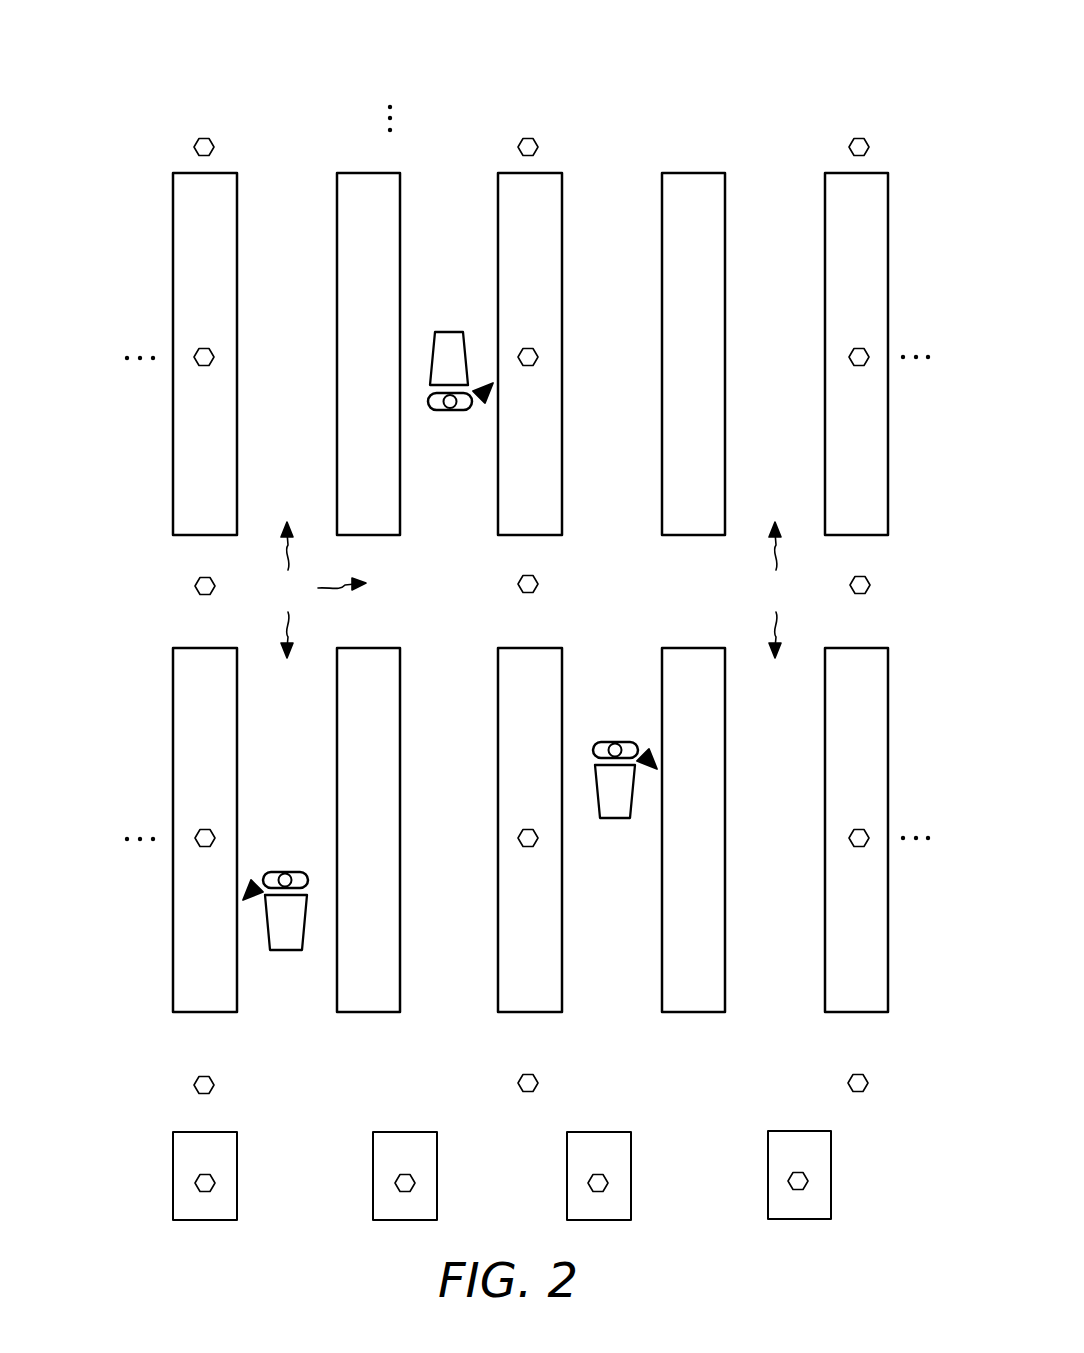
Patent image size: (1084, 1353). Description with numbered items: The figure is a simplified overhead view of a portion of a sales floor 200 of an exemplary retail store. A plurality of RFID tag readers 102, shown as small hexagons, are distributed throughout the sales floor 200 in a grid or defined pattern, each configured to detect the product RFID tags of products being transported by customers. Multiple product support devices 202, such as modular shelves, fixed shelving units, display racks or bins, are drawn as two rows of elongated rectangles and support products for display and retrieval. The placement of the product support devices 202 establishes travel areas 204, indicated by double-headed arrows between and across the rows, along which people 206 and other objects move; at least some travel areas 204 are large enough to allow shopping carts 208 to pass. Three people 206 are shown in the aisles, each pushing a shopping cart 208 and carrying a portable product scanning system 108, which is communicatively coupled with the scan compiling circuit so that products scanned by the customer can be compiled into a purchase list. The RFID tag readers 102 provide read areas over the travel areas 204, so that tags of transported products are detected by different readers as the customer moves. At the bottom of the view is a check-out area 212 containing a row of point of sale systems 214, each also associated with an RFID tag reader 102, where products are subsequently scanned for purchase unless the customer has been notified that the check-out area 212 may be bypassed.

The sales floor 200 is at (838, 70).
The RFID tag reader 102 is at (212, 140).
The product support device 202 is at (188, 265).
The travel area 204 is at (533, 590).
The people 206 is at (449, 411).
The shopping cart 208 is at (447, 336).
The portable product scanning system 108 is at (487, 403).
The check-out area 212 is at (136, 1111).
The point of sale system 214 is at (223, 1133).